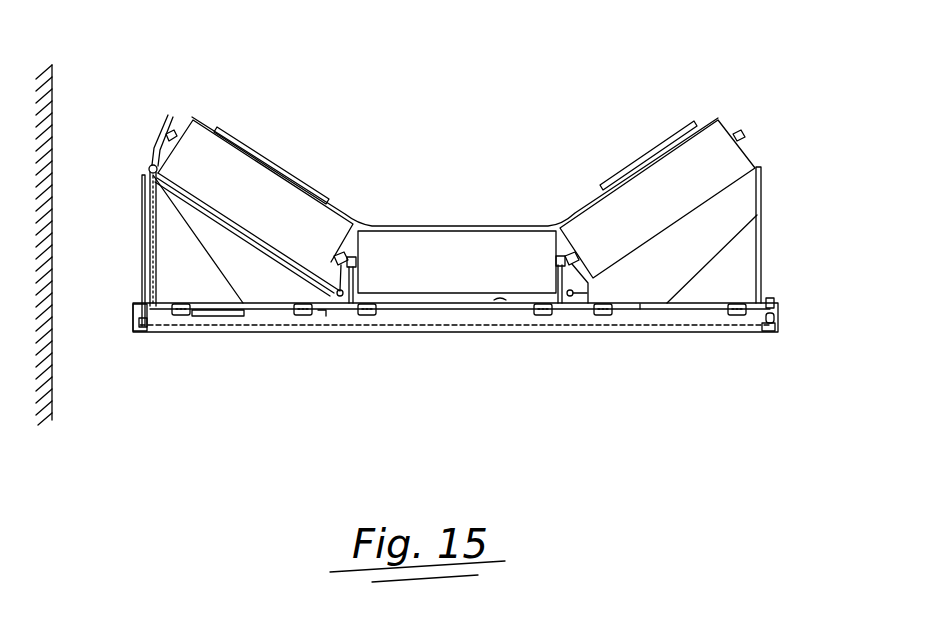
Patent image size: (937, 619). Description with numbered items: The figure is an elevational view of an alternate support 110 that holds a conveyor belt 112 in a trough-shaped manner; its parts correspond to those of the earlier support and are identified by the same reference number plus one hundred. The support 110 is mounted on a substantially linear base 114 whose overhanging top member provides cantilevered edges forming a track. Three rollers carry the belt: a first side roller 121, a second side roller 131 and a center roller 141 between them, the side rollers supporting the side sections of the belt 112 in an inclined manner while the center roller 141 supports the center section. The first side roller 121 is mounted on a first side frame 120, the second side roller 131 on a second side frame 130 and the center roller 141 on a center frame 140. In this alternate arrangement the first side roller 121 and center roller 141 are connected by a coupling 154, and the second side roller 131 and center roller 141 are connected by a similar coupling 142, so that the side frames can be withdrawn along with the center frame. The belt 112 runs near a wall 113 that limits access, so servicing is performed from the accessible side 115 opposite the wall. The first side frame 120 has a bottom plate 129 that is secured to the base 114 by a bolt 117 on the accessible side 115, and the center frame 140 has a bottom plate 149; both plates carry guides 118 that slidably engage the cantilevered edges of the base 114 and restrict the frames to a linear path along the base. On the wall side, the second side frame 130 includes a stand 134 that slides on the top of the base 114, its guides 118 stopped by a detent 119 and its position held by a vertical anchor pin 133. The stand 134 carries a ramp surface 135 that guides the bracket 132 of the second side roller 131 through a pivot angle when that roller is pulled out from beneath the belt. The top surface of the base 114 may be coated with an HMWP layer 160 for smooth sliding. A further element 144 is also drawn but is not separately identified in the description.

The support 110 is at (345, 58).
The conveyor belt 112 is at (493, 228).
The wall 113 is at (53, 345).
The base 114 is at (651, 318).
The accessible side 115 is at (772, 189).
The bolt 117 is at (770, 300).
The guides 118 is at (173, 320).
The detent 119 is at (210, 317).
The first side frame 120 is at (763, 190).
The first side roller 121 is at (662, 212).
The bottom plate 129 is at (708, 302).
The second side frame 130 is at (148, 192).
The second side roller 131 is at (256, 204).
The bracket 132 is at (278, 260).
The vertical anchor pin 133 is at (147, 195).
The stand 134 is at (152, 222).
The ramp surface 135 is at (196, 250).
The center frame 140 is at (357, 277).
The center roller 141 is at (462, 274).
The coupling 142 is at (338, 290).
The fastener 144 is at (323, 313).
The bottom plate 149 is at (500, 300).
The coupling 154 is at (553, 303).
The HMWP layer 160 is at (633, 307).